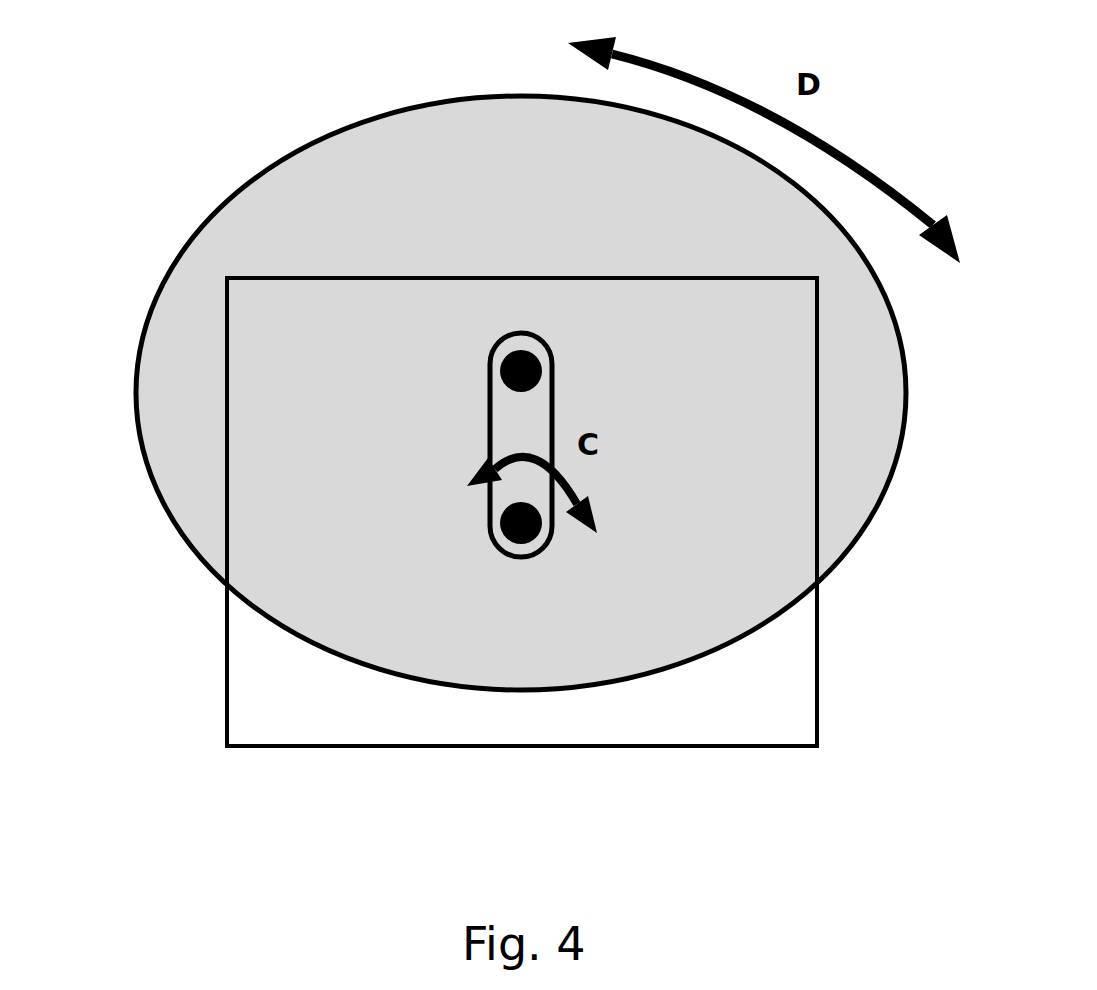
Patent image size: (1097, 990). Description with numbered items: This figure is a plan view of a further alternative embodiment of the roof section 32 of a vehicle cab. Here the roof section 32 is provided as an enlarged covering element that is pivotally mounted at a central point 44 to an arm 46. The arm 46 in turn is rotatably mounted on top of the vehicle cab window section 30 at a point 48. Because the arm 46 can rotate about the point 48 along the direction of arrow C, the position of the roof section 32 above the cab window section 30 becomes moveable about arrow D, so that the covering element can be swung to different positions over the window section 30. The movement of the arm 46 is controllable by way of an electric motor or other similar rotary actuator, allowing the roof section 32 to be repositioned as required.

The vehicle cab window section 30 is at (227, 688).
The roof section 32 is at (310, 175).
The central point 44 is at (505, 372).
The arm 46 is at (490, 430).
The point 48 is at (505, 528).